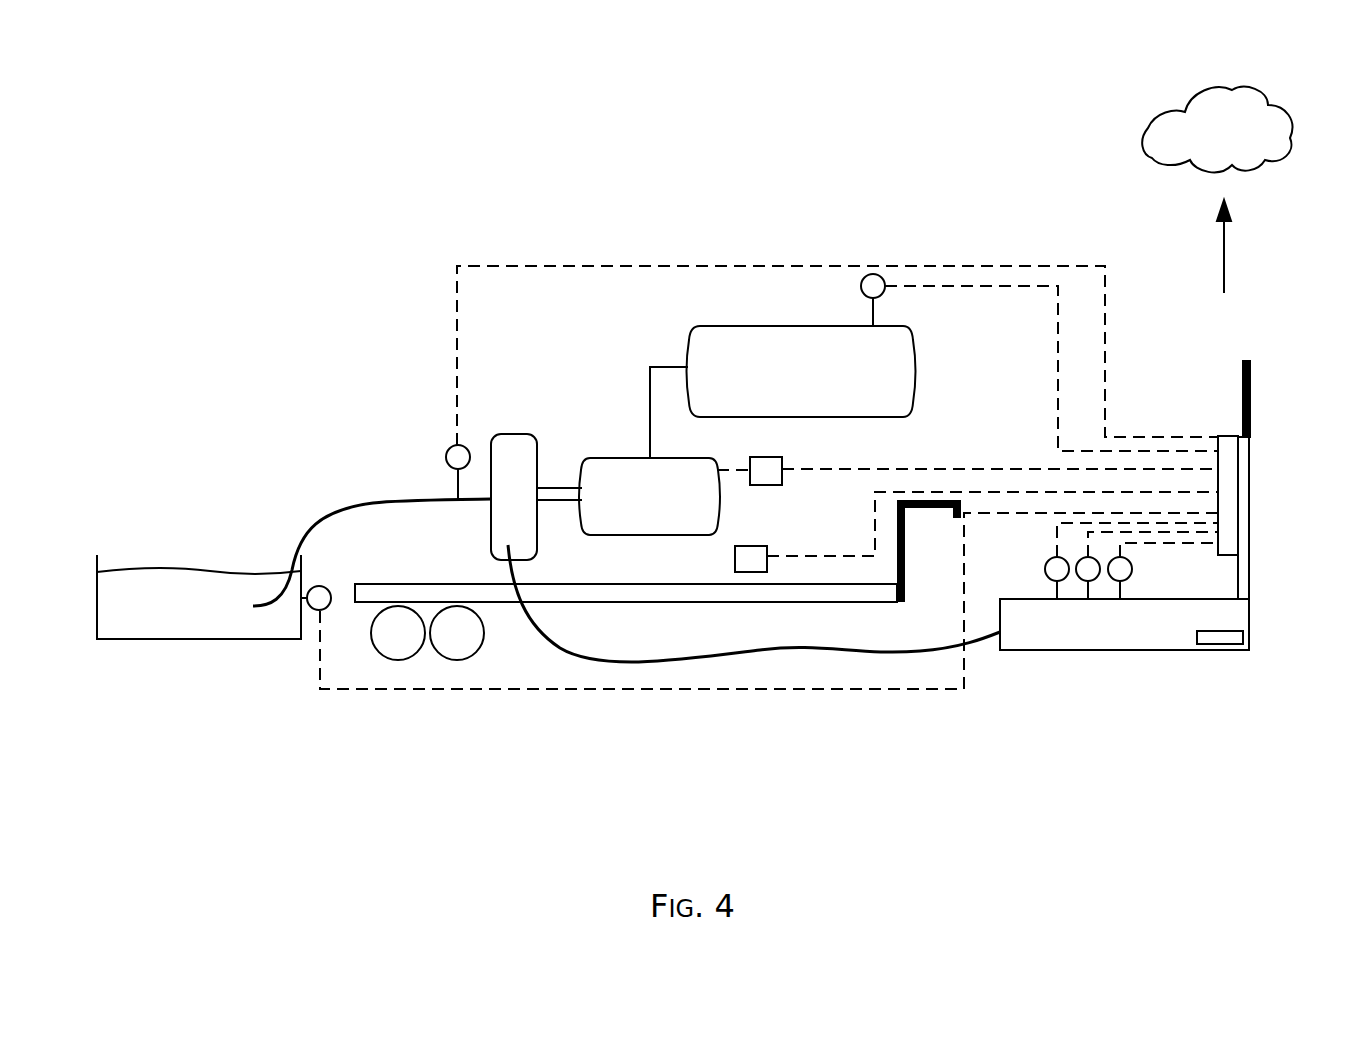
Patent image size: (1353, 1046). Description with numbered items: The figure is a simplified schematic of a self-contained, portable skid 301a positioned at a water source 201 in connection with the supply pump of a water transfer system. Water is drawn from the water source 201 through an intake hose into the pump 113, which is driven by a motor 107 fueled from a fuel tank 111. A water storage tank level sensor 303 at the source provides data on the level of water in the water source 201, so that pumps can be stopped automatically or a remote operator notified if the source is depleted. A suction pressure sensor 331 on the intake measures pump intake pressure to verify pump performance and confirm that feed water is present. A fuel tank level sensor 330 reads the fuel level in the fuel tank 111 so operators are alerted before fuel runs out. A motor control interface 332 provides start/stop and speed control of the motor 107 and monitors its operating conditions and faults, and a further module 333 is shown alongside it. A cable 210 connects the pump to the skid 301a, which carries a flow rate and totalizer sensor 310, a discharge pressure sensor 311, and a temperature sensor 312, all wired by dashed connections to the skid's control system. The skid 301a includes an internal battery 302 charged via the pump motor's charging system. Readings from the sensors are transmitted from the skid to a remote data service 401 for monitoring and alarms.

The water source 201 is at (195, 567).
The water storage tank level sensor 303 is at (313, 610).
The suction pressure sensor 331 is at (444, 463).
The pump 113 is at (513, 434).
The motor 107 is at (621, 458).
The fuel tank 111 is at (918, 345).
The fuel tank level sensor 330 is at (876, 274).
The motor control interface 332 is at (768, 486).
The sensor module 333 is at (750, 572).
The cable 210 is at (545, 636).
The skid 301a is at (1145, 652).
The internal battery 302 is at (1222, 645).
The flow rate and totalizer sensor 310 is at (1046, 578).
The discharge pressure sensor 311 is at (1078, 582).
The temperature sensor 312 is at (1115, 583).
The remote data service 401 is at (1152, 118).